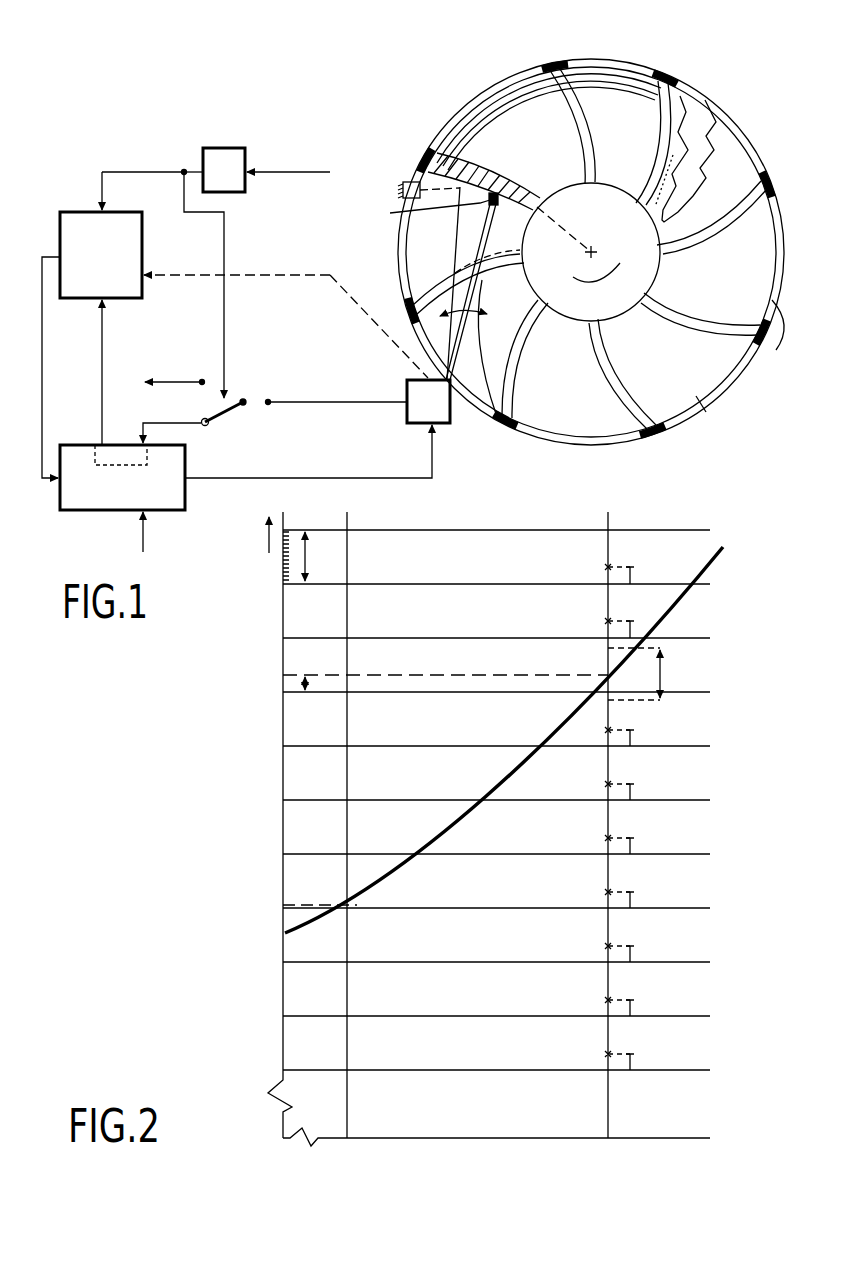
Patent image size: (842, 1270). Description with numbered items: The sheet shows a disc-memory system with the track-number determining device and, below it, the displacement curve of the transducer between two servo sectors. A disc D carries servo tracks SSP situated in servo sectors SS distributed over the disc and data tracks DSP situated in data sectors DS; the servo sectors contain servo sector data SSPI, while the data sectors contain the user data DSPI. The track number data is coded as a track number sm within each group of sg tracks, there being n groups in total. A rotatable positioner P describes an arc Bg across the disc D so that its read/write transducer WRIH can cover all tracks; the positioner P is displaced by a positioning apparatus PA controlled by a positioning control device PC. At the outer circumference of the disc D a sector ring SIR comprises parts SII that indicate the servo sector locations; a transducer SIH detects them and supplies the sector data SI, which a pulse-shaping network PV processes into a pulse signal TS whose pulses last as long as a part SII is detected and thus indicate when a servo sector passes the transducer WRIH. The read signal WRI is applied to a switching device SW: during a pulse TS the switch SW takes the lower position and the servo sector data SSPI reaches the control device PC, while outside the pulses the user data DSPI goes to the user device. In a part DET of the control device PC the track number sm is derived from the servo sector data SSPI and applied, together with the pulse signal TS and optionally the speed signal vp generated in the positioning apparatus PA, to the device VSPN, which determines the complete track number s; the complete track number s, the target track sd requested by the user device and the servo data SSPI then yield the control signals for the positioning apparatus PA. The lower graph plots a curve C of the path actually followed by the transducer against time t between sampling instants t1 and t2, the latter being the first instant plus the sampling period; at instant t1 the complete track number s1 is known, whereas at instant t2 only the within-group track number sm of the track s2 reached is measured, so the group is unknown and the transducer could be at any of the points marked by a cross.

In FIG. 1, the servo tracks SSP is at (545, 72).
In FIG. 1, the data tracks DSP is at (633, 75).
In FIG. 1, the arc Bg is at (430, 170).
In FIG. 1, the number of groups n is at (702, 170).
In FIG. 1, the group size sg is at (683, 102).
In FIG. 2, the group size sg is at (495, 616).
In FIG. 1, the transducer SIH is at (403, 188).
In FIG. 1, the read/write transducer WRIH is at (415, 210).
In FIG. 1, the positioner P is at (472, 363).
In FIG. 1, the positioning apparatus PA is at (415, 422).
In FIG. 1, the sector ring SIR is at (762, 345).
In FIG. 1, the sector ring parts SII is at (752, 374).
In FIG. 1, the disc D is at (708, 398).
In FIG. 1, the data sectors DS is at (563, 425).
In FIG. 1, the servo sectors SS is at (658, 432).
In FIG. 1, the device for determining the complete track number VSPN is at (138, 252).
In FIG. 1, the pulse-shaping network PV is at (227, 155).
In FIG. 1, the pulse signal TS is at (153, 163).
In FIG. 1, the sector subdivision data SI is at (302, 165).
In FIG. 1, the speed signal vp is at (278, 268).
In FIG. 1, the complete track number s is at (51, 367).
In FIG. 2, the complete track number s is at (258, 534).
In FIG. 1, the track number within a group sm is at (102, 400).
In FIG. 2, the track number within a group sm is at (318, 673).
In FIG. 1, the user data DSPI is at (173, 369).
In FIG. 1, the switching device SW is at (242, 400).
In FIG. 1, the servo sector data SSPI is at (190, 425).
In FIG. 1, the read signal WRI is at (337, 396).
In FIG. 1, the detector part DET is at (121, 441).
In FIG. 1, the positioning control device PC is at (180, 495).
In FIG. 1, the target track sd is at (155, 537).
In FIG. 2, the track position at second instant s2 is at (430, 685).
In FIG. 2, the complete track number at first instant s1 is at (309, 913).
In FIG. 2, the curve C is at (717, 560).
In FIG. 2, the first sampling instant t1 is at (352, 843).
In FIG. 2, the second sampling instant t2 is at (617, 842).
In FIG. 2, the time t is at (708, 1152).